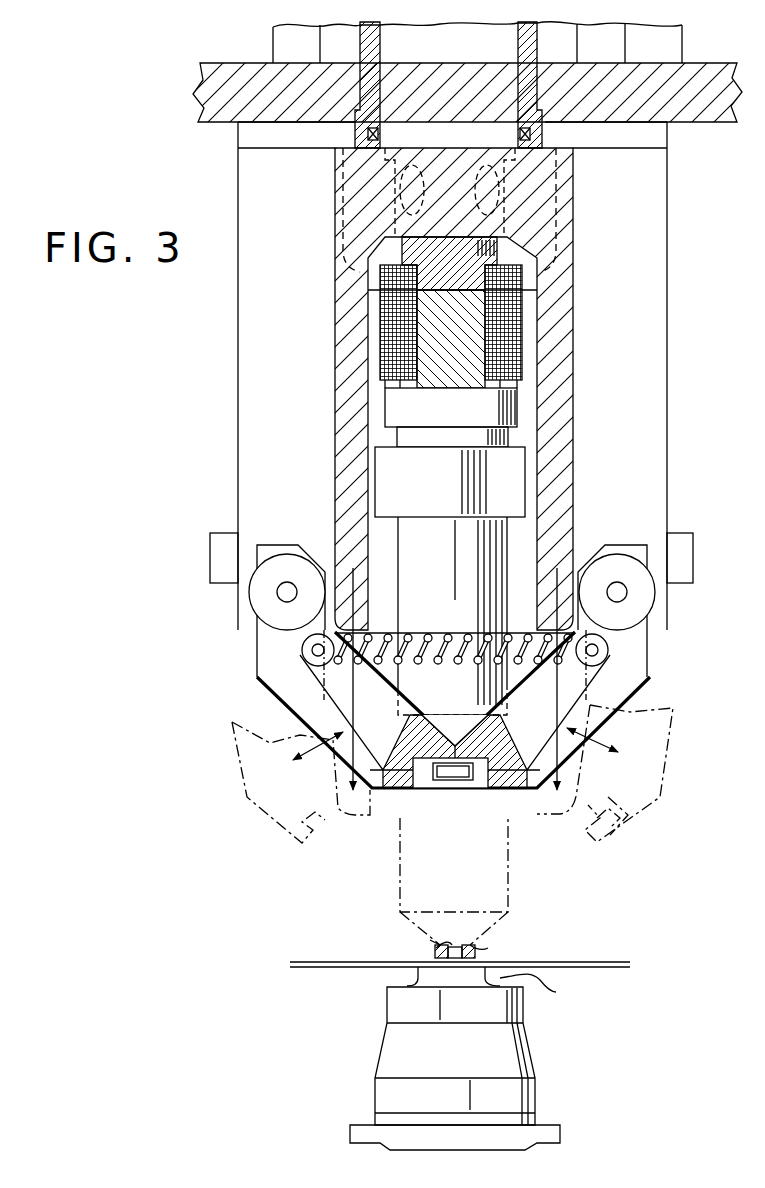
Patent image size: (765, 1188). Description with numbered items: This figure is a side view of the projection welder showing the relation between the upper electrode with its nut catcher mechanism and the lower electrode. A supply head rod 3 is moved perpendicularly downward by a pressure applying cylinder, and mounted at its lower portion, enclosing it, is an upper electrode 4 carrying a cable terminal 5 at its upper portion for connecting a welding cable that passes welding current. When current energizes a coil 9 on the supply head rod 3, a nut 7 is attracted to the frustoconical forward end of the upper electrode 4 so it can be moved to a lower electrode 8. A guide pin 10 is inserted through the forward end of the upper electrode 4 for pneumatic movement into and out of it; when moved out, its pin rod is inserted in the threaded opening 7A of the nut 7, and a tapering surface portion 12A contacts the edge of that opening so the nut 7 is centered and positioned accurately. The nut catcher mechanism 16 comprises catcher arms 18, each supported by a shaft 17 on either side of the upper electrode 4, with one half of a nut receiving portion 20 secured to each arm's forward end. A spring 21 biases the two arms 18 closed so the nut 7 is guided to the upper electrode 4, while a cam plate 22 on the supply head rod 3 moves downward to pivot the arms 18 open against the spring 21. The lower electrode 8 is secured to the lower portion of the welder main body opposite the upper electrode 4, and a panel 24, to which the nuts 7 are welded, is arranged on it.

The supply head rod 3 is at (518, 406).
The upper electrode 4 is at (442, 704).
The cable terminal 5 is at (522, 480).
The nut 7 is at (466, 782).
The threaded opening 7A is at (440, 945).
The lower electrode 8 is at (459, 1058).
The coil 9 is at (522, 326).
The guide pin 10 is at (490, 786).
The tapering surface portion 12A is at (478, 945).
The nut catcher mechanism 16 is at (408, 796).
The shaft 17 is at (258, 604).
The catcher arms 18 is at (268, 680).
The nut receiving portion 20 is at (428, 786).
The spring 21 is at (405, 636).
The cam plate 22 is at (347, 505).
The panel 24 is at (600, 962).